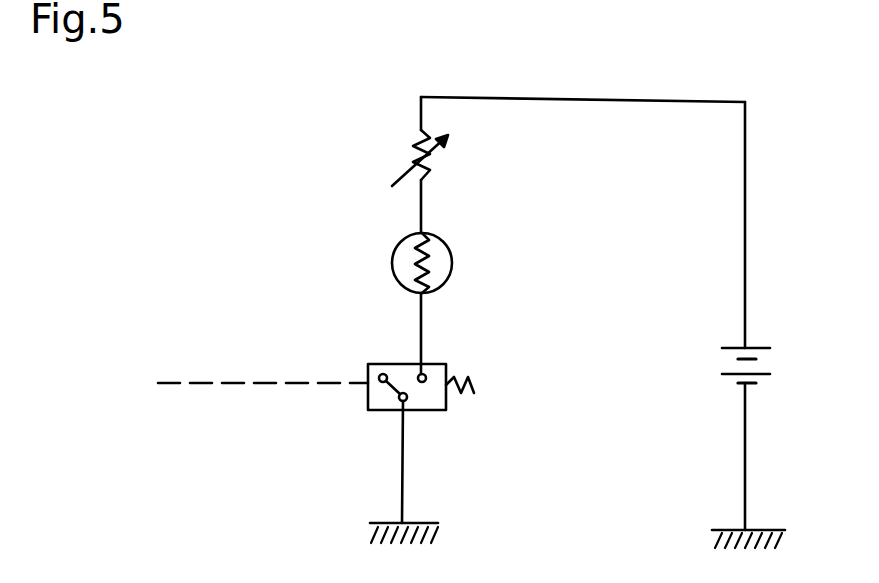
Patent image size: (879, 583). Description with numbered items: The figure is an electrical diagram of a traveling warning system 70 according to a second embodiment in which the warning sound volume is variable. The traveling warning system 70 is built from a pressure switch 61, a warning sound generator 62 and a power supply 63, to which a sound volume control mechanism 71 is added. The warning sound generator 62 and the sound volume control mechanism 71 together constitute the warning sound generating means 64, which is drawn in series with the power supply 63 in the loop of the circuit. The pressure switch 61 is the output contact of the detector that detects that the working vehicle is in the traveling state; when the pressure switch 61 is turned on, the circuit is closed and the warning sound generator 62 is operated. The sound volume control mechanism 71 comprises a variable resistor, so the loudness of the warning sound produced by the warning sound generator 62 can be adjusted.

The traveling warning system 70 is at (230, 198).
The sound volume control mechanism 71 is at (410, 145).
The warning sound generator 62 is at (452, 267).
The warning sound generating means 64 is at (316, 363).
The pressure switch 61 is at (372, 410).
The power supply 63 is at (757, 348).